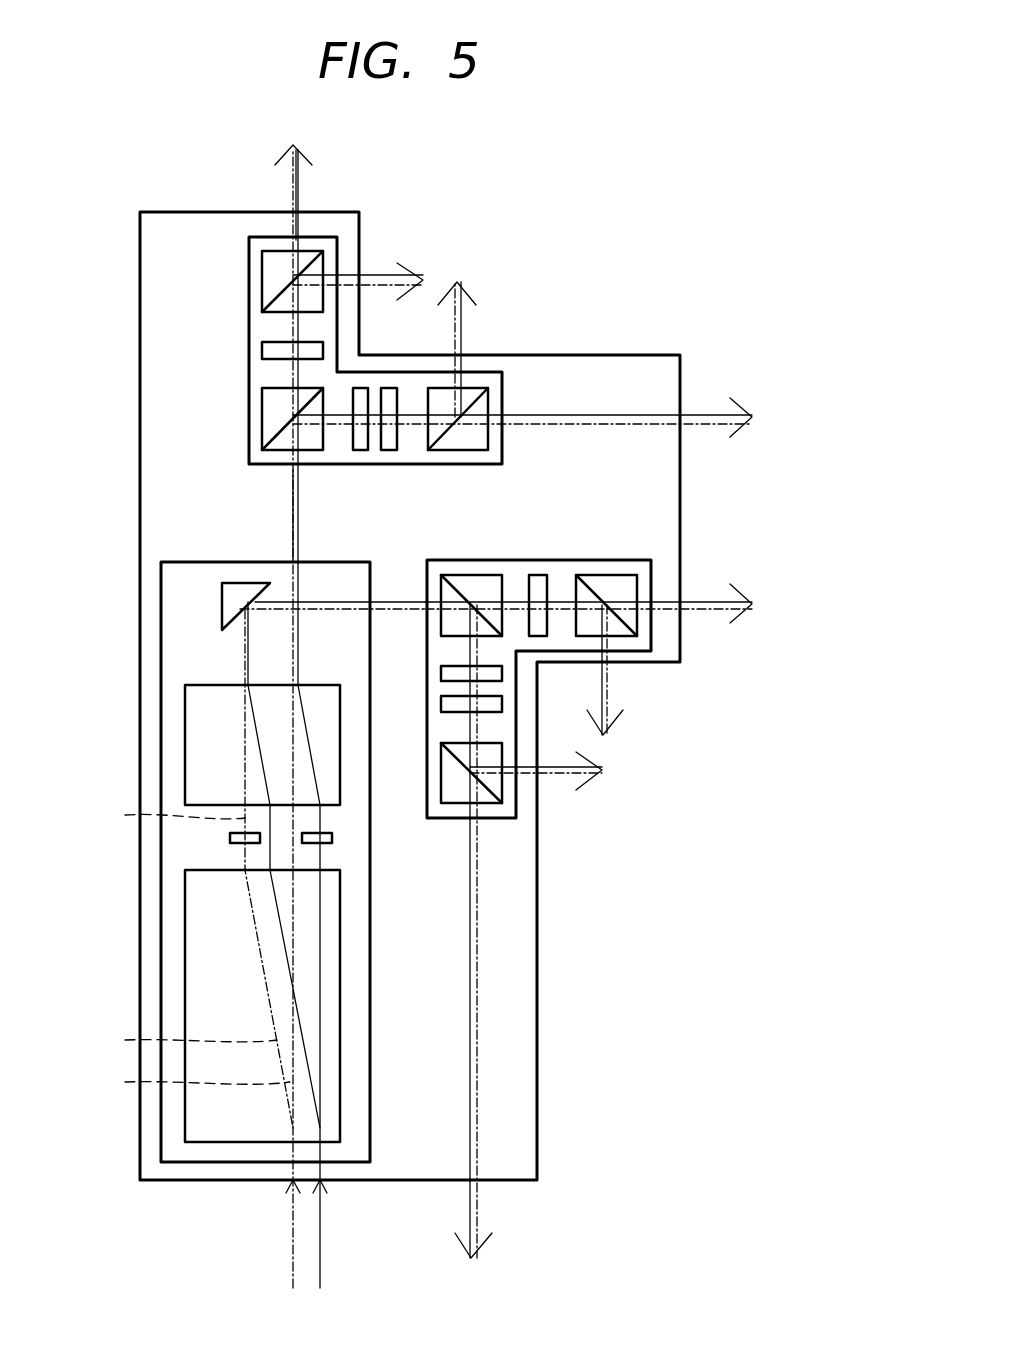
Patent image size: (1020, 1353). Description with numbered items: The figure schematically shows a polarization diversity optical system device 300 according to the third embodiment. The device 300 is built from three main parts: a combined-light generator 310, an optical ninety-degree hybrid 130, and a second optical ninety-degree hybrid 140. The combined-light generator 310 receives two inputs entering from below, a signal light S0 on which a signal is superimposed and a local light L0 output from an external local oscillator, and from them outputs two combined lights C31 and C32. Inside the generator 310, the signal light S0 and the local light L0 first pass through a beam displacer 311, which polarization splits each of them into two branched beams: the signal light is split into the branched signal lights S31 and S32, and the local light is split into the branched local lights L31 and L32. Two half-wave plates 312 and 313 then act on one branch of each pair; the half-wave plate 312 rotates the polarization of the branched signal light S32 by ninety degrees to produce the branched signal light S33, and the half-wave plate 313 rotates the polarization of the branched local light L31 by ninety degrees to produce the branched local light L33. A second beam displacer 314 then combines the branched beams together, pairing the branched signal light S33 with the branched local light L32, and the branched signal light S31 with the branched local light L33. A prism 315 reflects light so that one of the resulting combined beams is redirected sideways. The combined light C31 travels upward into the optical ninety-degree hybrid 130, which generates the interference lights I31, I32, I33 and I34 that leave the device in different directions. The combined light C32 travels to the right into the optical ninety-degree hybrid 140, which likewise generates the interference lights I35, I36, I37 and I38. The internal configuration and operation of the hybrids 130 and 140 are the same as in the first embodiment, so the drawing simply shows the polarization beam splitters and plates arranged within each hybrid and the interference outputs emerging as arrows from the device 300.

The polarization diversity optical system device 300 is at (202, 212).
The optical 90-degree hybrid 130 is at (249, 284).
The optical 90-degree hybrid 140 is at (560, 559).
The combined-light generator 310 is at (161, 976).
The beam displacer 311 is at (185, 916).
The half-wave plate 312 is at (228, 838).
The half-wave plate 313 is at (332, 840).
The beam displacer 314 is at (185, 744).
The prism 315 is at (222, 610).
The interference light I31 is at (318, 183).
The interference light I32 is at (380, 260).
The interference light I33 is at (708, 395).
The interference light I34 is at (480, 329).
The interference light I35 is at (708, 582).
The interference light I36 is at (630, 692).
The interference light I37 is at (505, 1213).
The interference light I38 is at (555, 790).
The combined light C31 is at (278, 513).
The combined light C32 is at (396, 585).
The signal light S0 is at (290, 1240).
The local light L0 is at (324, 1240).
The branched signal light S31 is at (184, 1083).
The branched signal light S32 is at (177, 1041).
The branched signal light S33 is at (161, 813).
The branched local light L31 is at (322, 1025).
The branched local light L32 is at (308, 1067).
The branched local light L33 is at (323, 817).